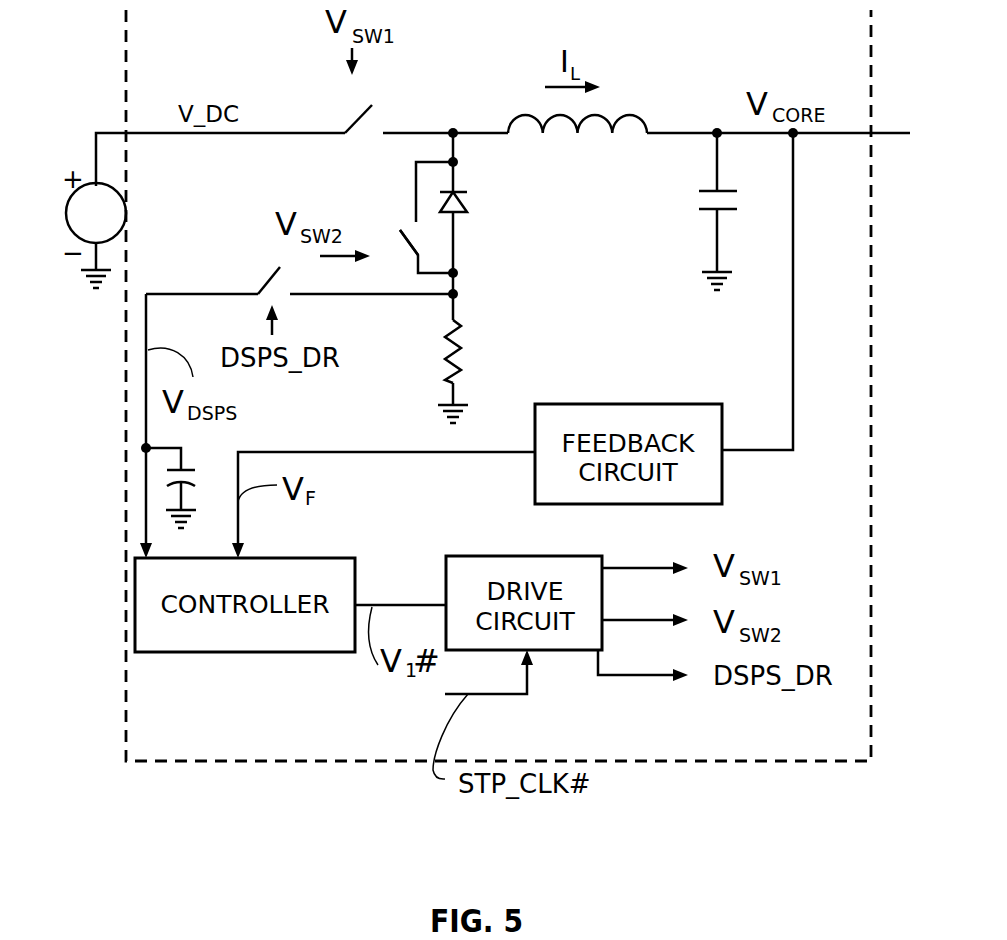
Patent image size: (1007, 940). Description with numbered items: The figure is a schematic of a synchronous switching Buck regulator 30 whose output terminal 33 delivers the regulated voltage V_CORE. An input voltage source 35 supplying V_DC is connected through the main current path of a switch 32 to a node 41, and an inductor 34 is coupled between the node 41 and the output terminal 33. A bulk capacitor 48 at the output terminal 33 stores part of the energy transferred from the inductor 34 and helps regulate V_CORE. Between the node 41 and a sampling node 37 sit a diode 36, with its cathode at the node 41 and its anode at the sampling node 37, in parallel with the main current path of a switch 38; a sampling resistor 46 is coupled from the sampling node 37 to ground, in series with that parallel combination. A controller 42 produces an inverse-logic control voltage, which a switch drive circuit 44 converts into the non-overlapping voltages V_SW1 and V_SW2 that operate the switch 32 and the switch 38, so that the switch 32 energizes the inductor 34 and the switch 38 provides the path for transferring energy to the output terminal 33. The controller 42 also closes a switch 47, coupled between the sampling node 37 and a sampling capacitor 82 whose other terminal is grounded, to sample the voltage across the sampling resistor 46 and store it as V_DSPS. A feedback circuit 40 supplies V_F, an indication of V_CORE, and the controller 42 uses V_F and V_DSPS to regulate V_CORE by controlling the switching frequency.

The synchronous switching Buck regulator 30 is at (706, 761).
The switch 32 is at (374, 110).
The output terminal 33 is at (805, 133).
The inductor 34 is at (628, 113).
The input voltage source 35 is at (64, 214).
The diode 36 is at (467, 196).
The sampling node 37 is at (462, 273).
The switch 38 is at (408, 232).
The feedback circuit 40 is at (680, 504).
The node 41 is at (454, 122).
The controller 42 is at (188, 652).
The switch drive circuit 44 is at (555, 556).
The sampling resistor 46 is at (462, 343).
The switch 47 is at (257, 290).
The bulk capacitor 48 is at (702, 209).
The sampling capacitor 82 is at (197, 475).